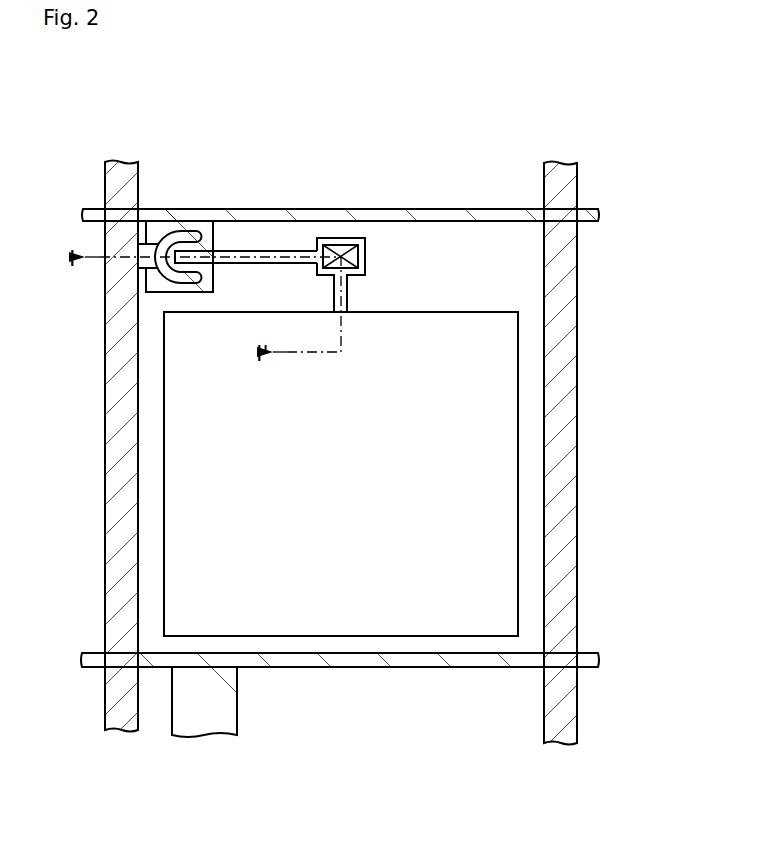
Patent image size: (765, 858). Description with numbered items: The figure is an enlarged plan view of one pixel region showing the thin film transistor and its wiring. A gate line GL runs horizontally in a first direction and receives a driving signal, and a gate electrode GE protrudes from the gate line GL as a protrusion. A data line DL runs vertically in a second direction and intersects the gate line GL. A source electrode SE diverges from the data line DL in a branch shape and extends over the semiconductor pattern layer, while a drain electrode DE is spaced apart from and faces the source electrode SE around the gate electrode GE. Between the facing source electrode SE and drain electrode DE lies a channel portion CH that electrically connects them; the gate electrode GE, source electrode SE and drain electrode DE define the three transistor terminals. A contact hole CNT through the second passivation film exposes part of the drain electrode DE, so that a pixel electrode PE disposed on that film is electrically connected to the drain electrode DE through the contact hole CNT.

The data line DL is at (577, 468).
The gate line GL is at (397, 215).
The gate electrode GE is at (211, 240).
The source electrode SE is at (174, 240).
The channel portion CH is at (176, 254).
The drain electrode DE is at (289, 251).
The contact hole CNT is at (340, 238).
The pixel electrode PE is at (518, 540).